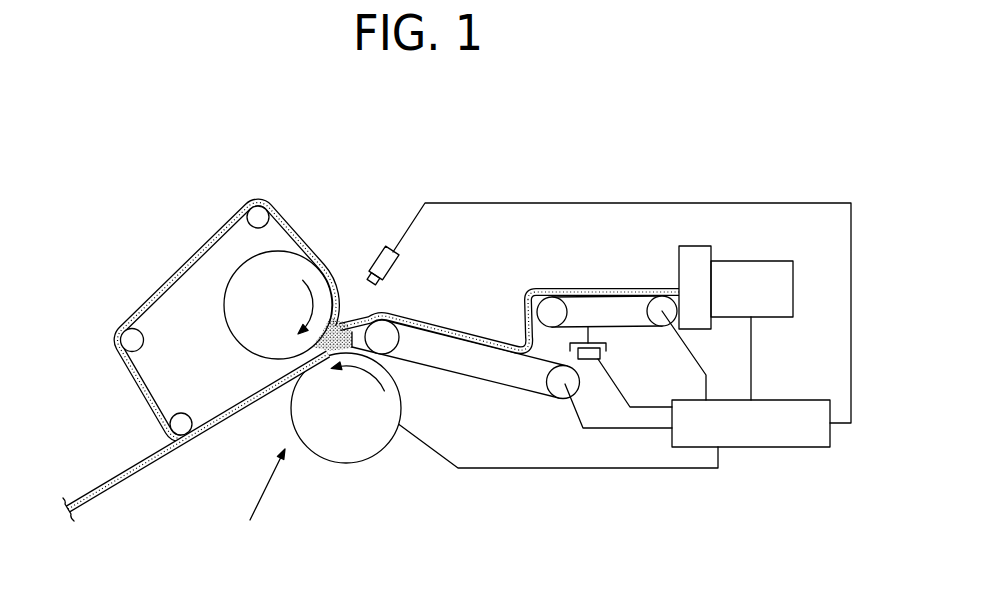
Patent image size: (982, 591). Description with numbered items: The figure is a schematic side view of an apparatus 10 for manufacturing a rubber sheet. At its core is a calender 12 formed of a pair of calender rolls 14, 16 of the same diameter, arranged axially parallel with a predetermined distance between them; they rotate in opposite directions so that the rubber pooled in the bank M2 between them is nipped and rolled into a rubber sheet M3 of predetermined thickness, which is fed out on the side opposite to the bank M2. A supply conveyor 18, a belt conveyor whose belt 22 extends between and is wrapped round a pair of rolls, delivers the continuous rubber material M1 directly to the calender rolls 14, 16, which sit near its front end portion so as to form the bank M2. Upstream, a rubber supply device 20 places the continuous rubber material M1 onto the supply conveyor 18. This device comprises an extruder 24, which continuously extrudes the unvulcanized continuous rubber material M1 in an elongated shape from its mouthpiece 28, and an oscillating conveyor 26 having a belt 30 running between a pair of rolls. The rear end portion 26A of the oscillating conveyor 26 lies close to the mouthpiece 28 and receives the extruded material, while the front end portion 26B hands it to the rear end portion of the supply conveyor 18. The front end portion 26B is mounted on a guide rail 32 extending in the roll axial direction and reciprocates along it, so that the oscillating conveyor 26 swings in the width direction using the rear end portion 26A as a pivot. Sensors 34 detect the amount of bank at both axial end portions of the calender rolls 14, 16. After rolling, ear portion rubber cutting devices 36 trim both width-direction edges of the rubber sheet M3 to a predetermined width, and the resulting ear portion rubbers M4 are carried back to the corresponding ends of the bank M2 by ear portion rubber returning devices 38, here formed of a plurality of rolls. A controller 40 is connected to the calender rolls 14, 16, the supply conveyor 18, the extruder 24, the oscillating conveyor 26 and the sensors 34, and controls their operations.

The apparatus for manufacturing a rubber sheet 10 is at (378, 137).
The calender 12 is at (261, 503).
The calender roll 14 is at (233, 310).
The calender roll 16 is at (347, 452).
The supply conveyor 18 is at (468, 368).
The rubber supply device 20 is at (629, 244).
The belt 22 is at (518, 392).
The extruder 24 is at (738, 272).
The oscillating conveyor 26 is at (589, 268).
The rear end portion of the oscillating conveyor 26A is at (652, 328).
The front end portion of the oscillating conveyor 26B is at (534, 297).
The mouthpiece 28 is at (692, 257).
The belt 30 is at (629, 333).
The guide rail 32 is at (593, 362).
The sensor 34 is at (383, 248).
The ear portion rubber cutting device 36 is at (182, 435).
The ear portion rubber returning device 38 is at (128, 337).
The controller 40 is at (817, 447).
The continuous rubber material M1 is at (572, 287).
The bank M2 is at (343, 323).
The rubber sheet M3 is at (122, 487).
The ear portion rubber M4 is at (180, 271).